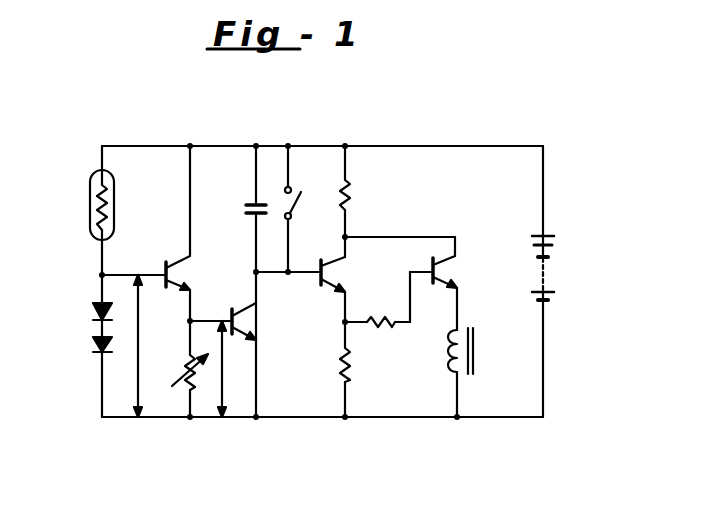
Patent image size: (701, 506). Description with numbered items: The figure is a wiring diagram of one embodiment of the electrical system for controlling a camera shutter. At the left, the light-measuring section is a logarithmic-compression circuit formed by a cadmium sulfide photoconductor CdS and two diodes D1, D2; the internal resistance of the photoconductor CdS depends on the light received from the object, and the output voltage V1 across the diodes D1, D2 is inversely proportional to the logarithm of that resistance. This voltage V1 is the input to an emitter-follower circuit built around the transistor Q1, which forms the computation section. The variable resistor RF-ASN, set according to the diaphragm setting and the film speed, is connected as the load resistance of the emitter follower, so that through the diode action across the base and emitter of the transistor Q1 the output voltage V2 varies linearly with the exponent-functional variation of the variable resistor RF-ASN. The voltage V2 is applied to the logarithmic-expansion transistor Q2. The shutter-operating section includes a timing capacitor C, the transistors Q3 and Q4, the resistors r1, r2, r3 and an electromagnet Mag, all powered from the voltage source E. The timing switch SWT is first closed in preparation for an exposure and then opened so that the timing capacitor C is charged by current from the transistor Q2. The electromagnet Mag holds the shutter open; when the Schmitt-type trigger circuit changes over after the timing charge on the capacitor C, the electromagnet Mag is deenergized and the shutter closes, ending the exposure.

The cadmium sulfide photoconductor CdS is at (90, 210).
The diode D1 is at (92, 310).
The diode D2 is at (92, 340).
The output voltage V1 is at (136, 346).
The output voltage V2 is at (230, 369).
The transistor Q1 is at (176, 258).
The transistor Q2 is at (252, 320).
The transistor Q3 is at (342, 268).
The transistor Q4 is at (450, 270).
The variable resistor RF-ASN is at (180, 372).
The timing capacitor C is at (250, 218).
The timing switch SWT is at (303, 215).
The resistor r1 is at (350, 372).
The resistor r2 is at (350, 198).
The resistor r3 is at (380, 326).
The electromagnet Mag is at (450, 356).
The voltage source E is at (537, 272).